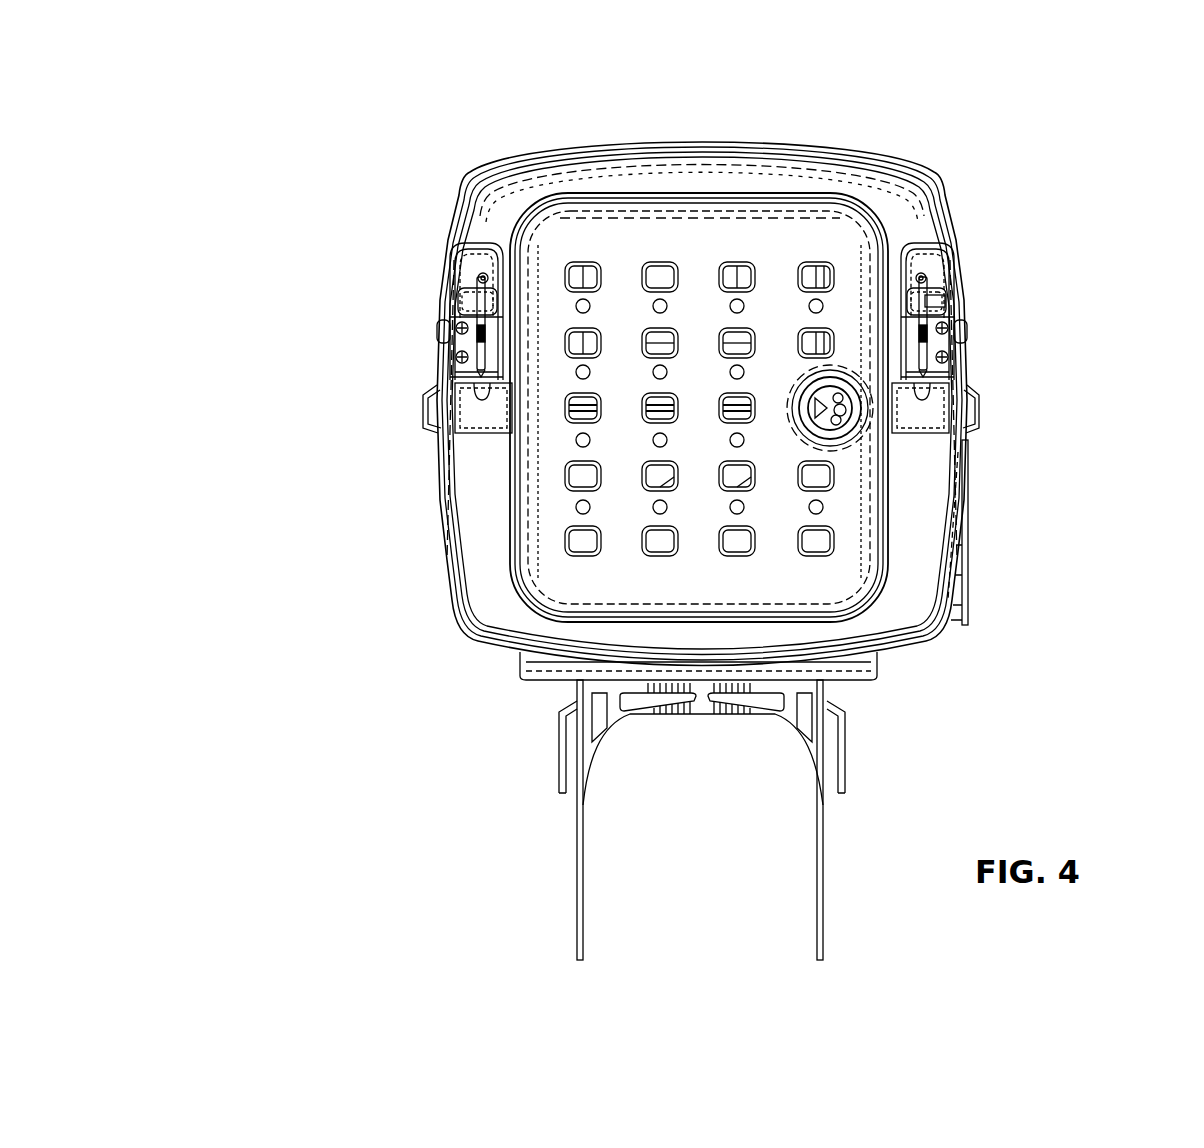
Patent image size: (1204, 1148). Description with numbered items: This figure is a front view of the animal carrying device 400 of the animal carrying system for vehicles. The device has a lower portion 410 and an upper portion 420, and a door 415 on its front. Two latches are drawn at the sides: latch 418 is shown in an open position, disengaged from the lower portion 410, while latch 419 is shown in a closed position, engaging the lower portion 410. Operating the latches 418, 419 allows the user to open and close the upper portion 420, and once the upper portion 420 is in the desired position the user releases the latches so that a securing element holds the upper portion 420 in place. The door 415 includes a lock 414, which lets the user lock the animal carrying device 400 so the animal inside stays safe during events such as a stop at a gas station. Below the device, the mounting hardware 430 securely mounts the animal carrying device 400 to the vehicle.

The animal carrying device 400 is at (1052, 128).
The lower portion 410 is at (464, 588).
The lock 414 is at (840, 430).
The door 415 is at (608, 225).
The latch 418 is at (485, 282).
The latch 419 is at (917, 292).
The upper portion 420 is at (865, 190).
The mounting hardware 430 is at (495, 826).